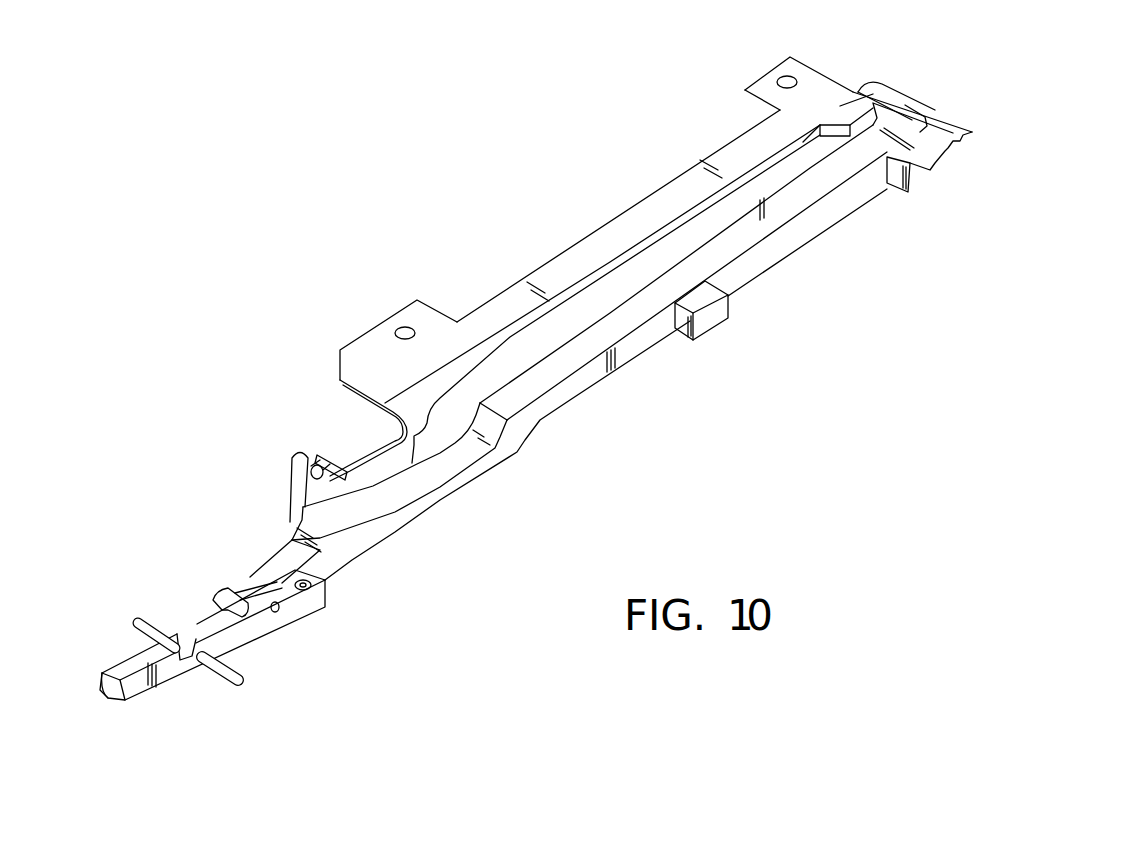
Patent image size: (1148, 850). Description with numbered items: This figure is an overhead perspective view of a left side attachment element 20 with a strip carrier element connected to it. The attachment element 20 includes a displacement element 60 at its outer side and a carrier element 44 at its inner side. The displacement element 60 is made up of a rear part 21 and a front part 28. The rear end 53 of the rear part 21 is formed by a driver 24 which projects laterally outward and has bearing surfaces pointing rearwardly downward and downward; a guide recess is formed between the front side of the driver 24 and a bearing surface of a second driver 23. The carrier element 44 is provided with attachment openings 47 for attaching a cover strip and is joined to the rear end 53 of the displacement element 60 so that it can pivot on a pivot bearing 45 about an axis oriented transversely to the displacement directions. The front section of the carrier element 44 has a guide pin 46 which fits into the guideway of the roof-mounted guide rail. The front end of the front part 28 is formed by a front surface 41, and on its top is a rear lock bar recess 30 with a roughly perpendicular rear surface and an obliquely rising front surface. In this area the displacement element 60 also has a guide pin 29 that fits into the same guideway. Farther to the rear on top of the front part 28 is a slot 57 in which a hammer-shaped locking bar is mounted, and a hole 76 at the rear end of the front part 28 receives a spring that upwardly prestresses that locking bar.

The attachment element 20 is at (462, 212).
The rear part 21 is at (800, 236).
The second driver 23 is at (712, 317).
The driver 24 is at (930, 168).
The front part 28 is at (265, 630).
The guide pin 29 is at (217, 682).
The rear lock bar recess 30 is at (178, 640).
The front surface 41 is at (103, 692).
The carrier element 44 is at (606, 237).
The pivot bearing 45 is at (906, 92).
The guide pin 46 is at (333, 452).
The attachment openings 47 is at (784, 78).
The rear end 53 is at (912, 138).
The slot 57 is at (242, 583).
The displacement element 60 is at (590, 418).
The hole 76 is at (317, 574).